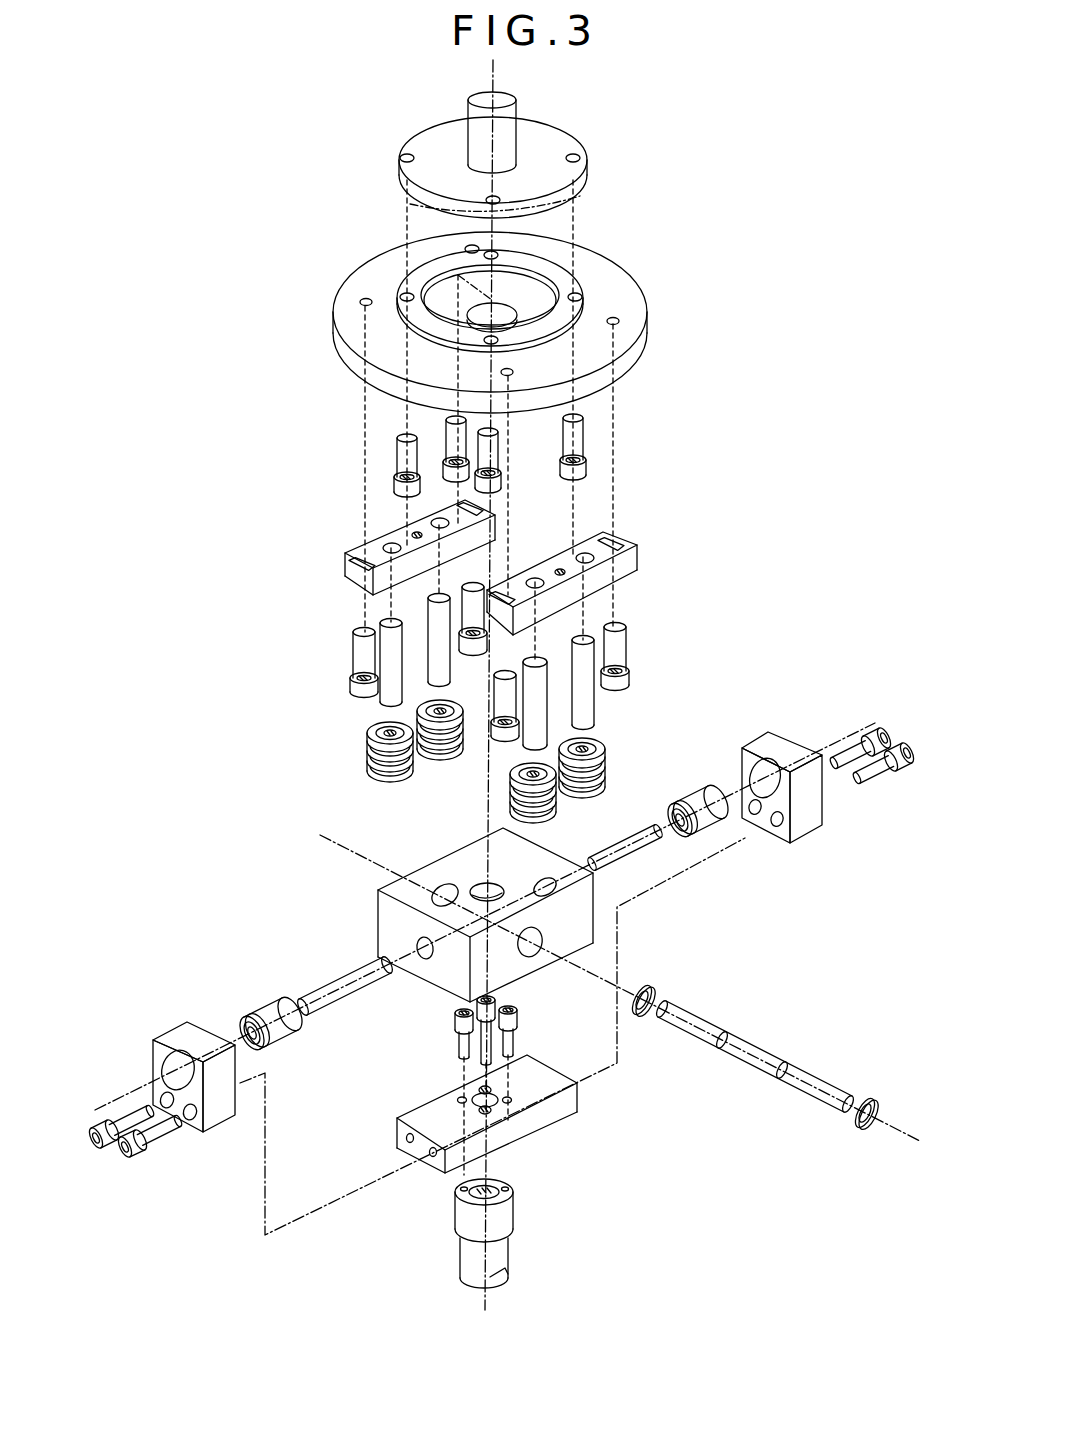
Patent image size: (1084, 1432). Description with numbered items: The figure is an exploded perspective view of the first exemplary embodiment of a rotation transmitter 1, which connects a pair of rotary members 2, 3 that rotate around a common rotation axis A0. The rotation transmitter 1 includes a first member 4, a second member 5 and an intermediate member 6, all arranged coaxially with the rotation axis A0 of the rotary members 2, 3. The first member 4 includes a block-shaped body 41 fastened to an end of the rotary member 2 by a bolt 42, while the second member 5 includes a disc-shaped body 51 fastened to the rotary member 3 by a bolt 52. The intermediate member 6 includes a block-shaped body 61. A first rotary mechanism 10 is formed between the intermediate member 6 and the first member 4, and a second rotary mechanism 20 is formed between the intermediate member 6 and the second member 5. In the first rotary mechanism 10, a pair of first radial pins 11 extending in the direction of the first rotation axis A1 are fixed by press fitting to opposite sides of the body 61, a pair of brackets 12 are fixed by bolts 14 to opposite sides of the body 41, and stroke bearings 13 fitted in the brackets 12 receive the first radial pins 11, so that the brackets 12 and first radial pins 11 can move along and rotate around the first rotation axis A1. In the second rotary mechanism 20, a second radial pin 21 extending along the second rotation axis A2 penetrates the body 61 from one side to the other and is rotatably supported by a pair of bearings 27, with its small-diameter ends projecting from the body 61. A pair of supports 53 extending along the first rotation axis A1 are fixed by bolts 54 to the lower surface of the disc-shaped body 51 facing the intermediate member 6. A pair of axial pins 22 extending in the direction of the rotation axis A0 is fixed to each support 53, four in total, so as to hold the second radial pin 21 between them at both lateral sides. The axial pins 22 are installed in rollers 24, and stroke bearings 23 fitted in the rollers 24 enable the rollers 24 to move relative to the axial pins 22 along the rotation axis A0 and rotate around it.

The rotation transmitter 1 is at (240, 268).
The rotary member 2 is at (524, 1247).
The rotary member 3 is at (432, 112).
The first member 4 is at (430, 1173).
The second member 5 is at (373, 247).
The intermediate member 6 is at (368, 906).
The first rotary mechanism 10 is at (825, 940).
The first radial pin 11 is at (633, 857).
The bracket 12 is at (785, 845).
The stroke bearing 13 is at (707, 833).
The bolt 14 is at (492, 973).
The second rotary mechanism 20 is at (232, 672).
The second radial pin 21 is at (771, 1040).
The axial pin 22 is at (381, 660).
The stroke bearing 23 is at (428, 698).
The roller 24 is at (453, 757).
The bearing 27 is at (655, 995).
The block-shaped body 41 is at (538, 1128).
The bolt 42 is at (516, 1050).
The disc-shaped body 51 is at (332, 330).
The bolt 52 is at (447, 437).
The support 53 is at (345, 568).
The bolt 54 is at (462, 588).
The block-shaped body 61 is at (380, 930).
The rotation axis A0 is at (497, 80).
The first rotation axis A1 is at (840, 733).
The second rotation axis A2 is at (345, 835).